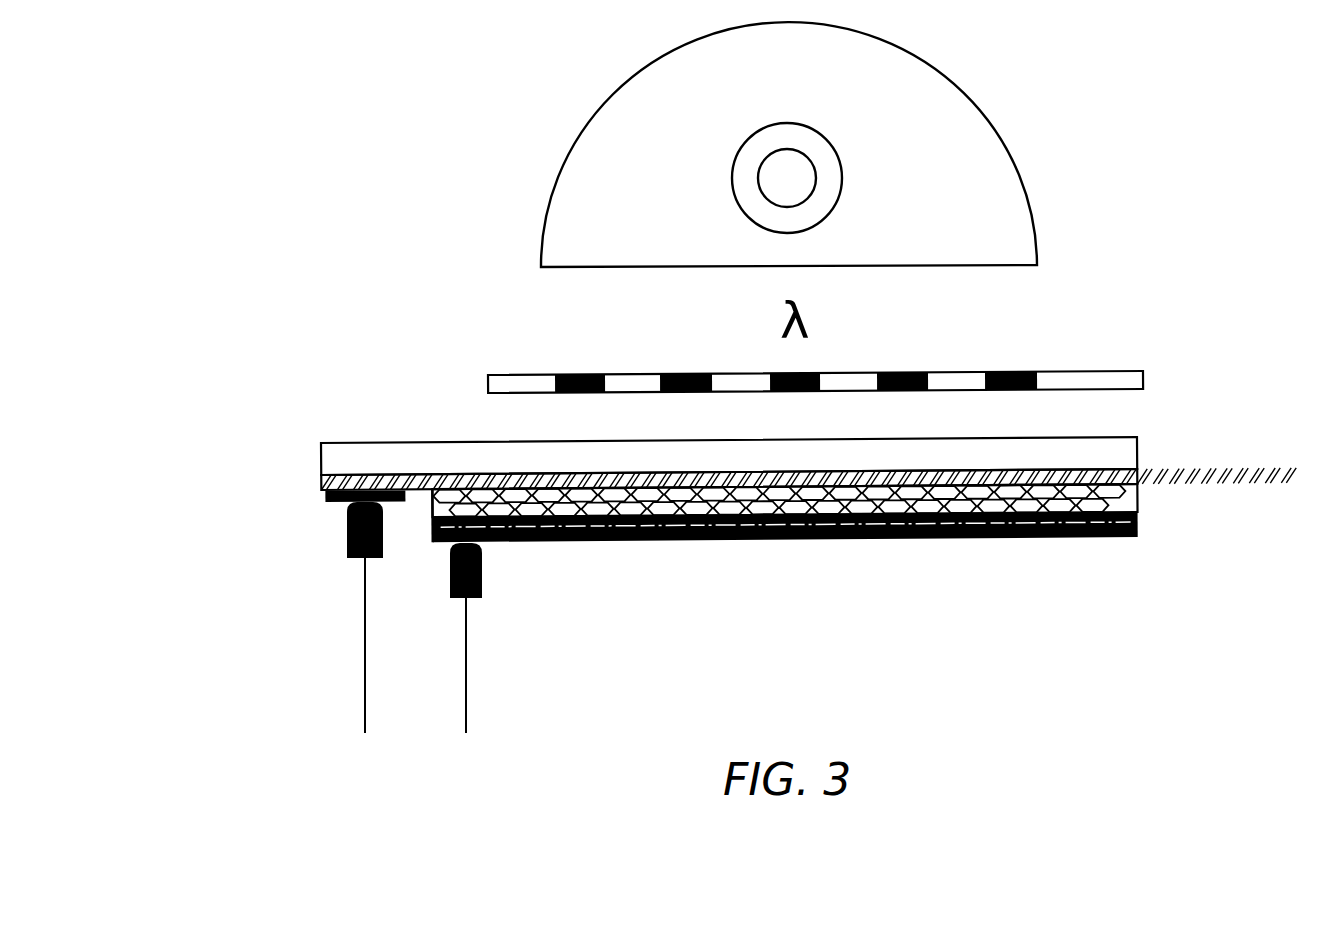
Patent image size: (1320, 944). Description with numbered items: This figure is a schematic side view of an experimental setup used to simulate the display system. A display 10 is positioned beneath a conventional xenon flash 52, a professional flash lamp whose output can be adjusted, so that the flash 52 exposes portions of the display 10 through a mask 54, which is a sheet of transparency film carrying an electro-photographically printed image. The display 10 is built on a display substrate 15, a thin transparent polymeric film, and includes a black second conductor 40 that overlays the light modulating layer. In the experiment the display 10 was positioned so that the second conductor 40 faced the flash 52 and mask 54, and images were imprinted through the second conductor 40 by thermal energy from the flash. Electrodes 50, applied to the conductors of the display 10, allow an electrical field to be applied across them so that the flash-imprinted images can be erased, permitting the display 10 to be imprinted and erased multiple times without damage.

The display 10 is at (301, 393).
The display substrate 15 is at (1117, 458).
The second conductor 40 is at (1097, 538).
The electrodes 50 is at (1133, 480).
The xenon flash 52 is at (928, 115).
The mask 54 is at (1108, 383).